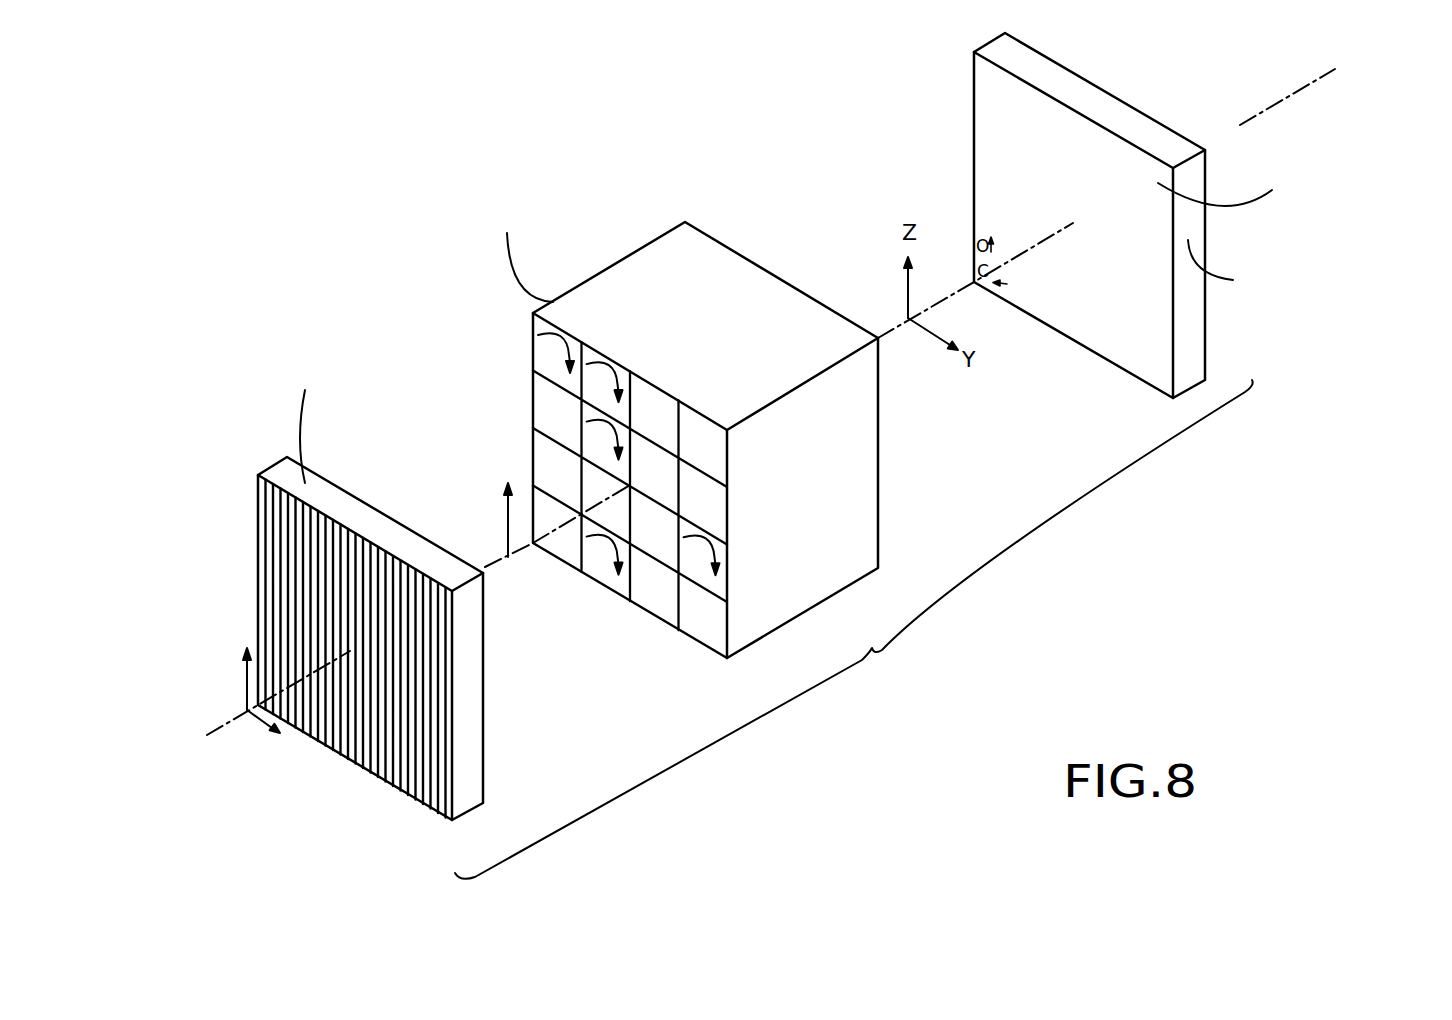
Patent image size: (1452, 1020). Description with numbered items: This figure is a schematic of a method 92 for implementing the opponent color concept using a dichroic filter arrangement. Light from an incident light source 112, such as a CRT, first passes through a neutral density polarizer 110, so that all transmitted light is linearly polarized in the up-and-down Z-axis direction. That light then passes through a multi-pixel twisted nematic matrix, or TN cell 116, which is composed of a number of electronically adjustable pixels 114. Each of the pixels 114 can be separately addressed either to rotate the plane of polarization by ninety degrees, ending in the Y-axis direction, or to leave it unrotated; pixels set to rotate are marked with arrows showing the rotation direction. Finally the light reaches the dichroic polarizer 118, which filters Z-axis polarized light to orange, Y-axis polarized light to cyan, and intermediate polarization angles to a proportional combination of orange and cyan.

The method for implementing the opponent color concept 92 is at (1112, 513).
The neutral density polarizer 110 is at (268, 557).
The incident light source 112 is at (260, 797).
The electronically adjustable pixels 114 is at (660, 483).
The multi-pixel twisted nematic matrix 116 is at (835, 511).
The dichroic polarizer 118 is at (1193, 357).